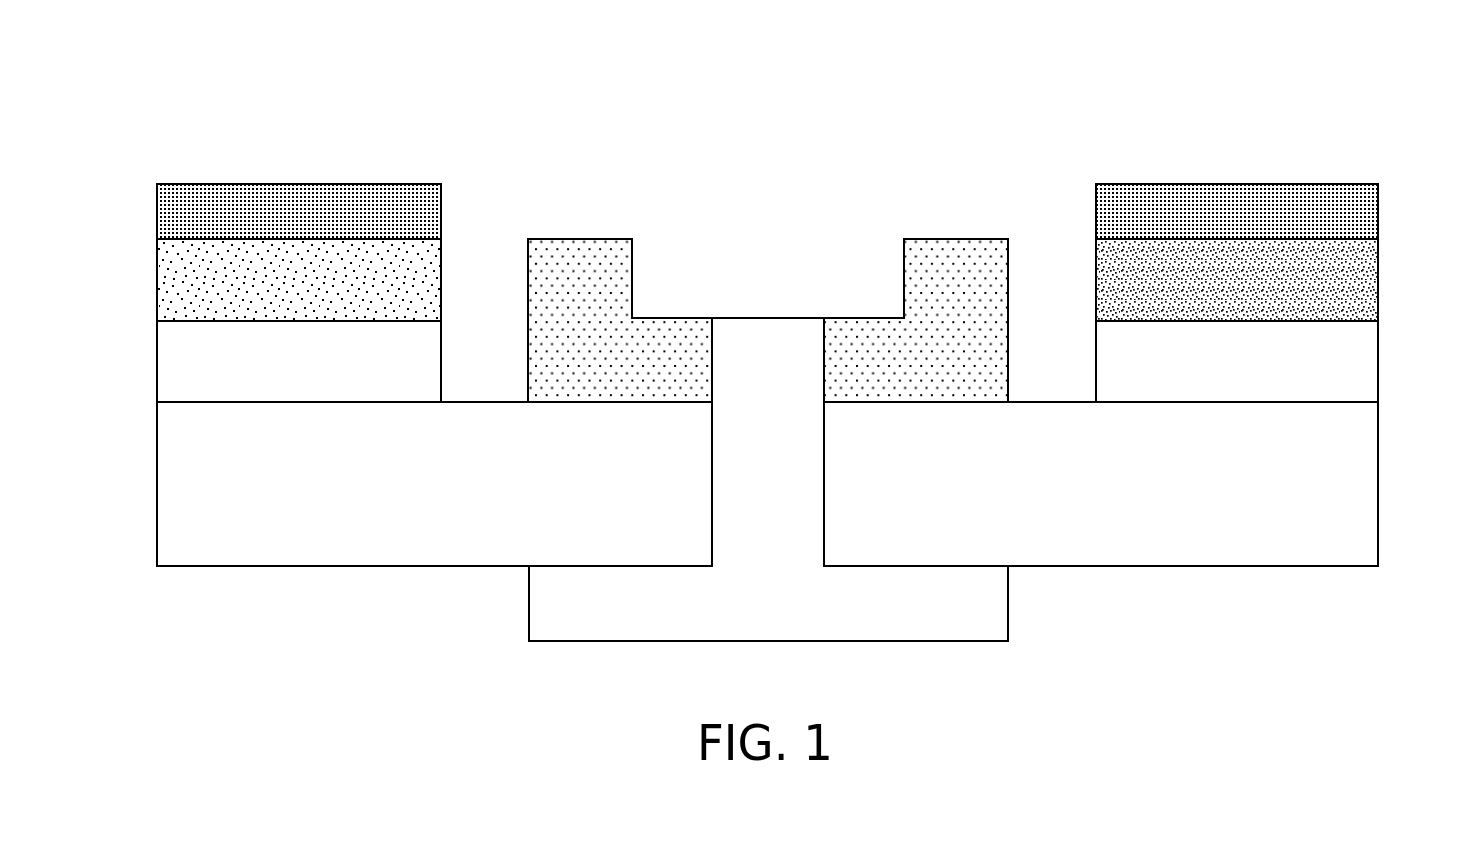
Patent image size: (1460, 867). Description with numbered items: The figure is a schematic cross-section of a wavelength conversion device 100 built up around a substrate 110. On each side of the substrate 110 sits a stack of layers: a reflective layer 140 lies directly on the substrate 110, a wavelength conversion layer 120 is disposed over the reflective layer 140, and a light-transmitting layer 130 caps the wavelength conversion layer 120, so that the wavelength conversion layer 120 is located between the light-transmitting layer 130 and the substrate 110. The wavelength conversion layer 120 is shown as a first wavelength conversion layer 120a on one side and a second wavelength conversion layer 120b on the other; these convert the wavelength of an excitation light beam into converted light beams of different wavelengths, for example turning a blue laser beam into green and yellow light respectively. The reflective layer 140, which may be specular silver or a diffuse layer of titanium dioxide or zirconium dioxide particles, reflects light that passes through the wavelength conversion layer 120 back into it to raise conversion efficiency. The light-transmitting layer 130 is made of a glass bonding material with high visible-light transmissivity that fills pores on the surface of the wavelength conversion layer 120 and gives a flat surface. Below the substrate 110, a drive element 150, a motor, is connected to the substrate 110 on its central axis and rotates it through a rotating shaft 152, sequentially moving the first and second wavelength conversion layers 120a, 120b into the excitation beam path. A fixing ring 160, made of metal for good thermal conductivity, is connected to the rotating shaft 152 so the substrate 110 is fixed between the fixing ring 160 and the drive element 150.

The wavelength conversion device 100 is at (1397, 697).
The substrate 110 is at (1372, 482).
The wavelength conversion layer 120 is at (767, 178).
The first wavelength conversion layer 120a is at (1380, 283).
The second wavelength conversion layer 120b is at (158, 283).
The light-transmitting layer 130 is at (1380, 212).
The reflective layer 140 is at (1373, 360).
The drive element 150 is at (1002, 607).
The rotating shaft 152 is at (765, 318).
The fixing ring 160 is at (955, 239).